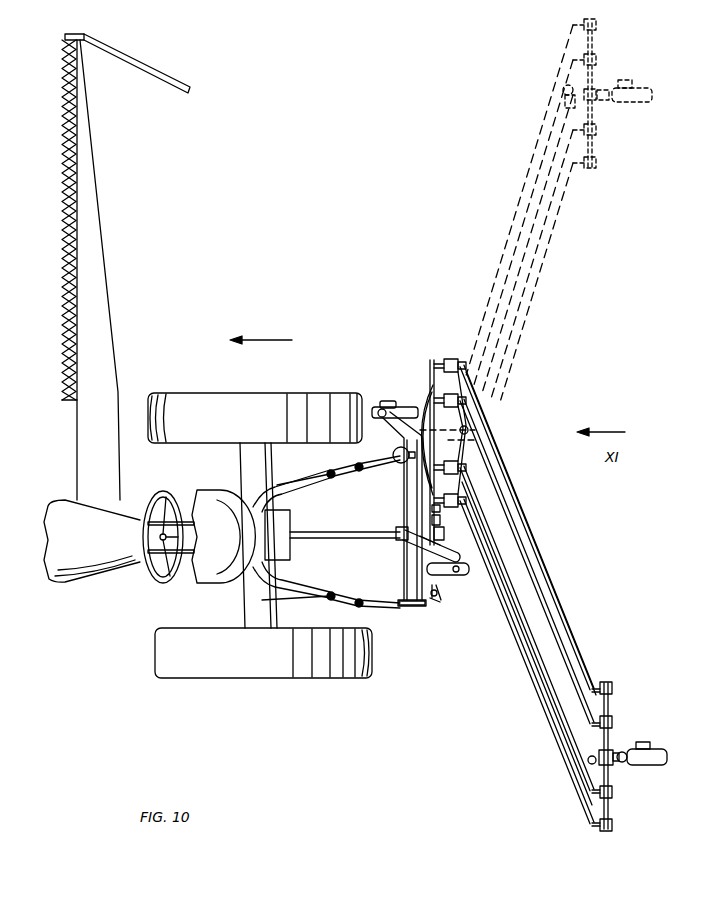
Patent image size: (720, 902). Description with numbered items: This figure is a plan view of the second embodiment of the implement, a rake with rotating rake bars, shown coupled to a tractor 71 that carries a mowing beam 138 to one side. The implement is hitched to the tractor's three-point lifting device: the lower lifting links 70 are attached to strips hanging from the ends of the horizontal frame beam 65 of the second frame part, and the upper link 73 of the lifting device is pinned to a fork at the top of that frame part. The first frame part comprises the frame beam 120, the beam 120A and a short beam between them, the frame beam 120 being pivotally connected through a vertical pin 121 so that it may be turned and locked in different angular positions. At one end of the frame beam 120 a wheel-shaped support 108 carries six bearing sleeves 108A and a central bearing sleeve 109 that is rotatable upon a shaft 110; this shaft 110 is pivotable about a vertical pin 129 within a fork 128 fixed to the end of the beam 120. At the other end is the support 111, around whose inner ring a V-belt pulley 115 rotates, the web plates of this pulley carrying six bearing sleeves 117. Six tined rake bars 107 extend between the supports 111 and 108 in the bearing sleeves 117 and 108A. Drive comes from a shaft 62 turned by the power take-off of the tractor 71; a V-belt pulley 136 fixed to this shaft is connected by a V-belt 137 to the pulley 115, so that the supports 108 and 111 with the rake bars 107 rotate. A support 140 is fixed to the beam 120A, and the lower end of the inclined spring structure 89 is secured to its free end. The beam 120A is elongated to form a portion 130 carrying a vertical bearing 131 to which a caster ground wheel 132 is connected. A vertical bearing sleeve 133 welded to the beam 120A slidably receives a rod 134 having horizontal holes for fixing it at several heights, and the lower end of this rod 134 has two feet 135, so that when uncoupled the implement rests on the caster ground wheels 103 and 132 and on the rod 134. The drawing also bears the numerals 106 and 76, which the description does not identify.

The mowing beam 138 is at (90, 177).
The direction of travel arrow 106 is at (262, 330).
The tractor 71 is at (303, 395).
The vertical bearing 131 is at (376, 408).
The caster ground wheel 132 is at (390, 401).
The portion 130 is at (410, 407).
The support 111 is at (430, 380).
The bearing sleeves 117 is at (450, 358).
The vertical pin 121 is at (470, 430).
The ball joint 76 is at (394, 452).
The lower lifting links 70 is at (380, 468).
The horizontal frame beam 65 is at (401, 505).
The V-belt pulley 115 is at (452, 474).
The upper link 73 is at (347, 532).
The V-belt 137 is at (441, 511).
The V-belt pulley 136 is at (441, 523).
The shaft 62 is at (446, 536).
The inclined spring structure 89 is at (420, 550).
The support 140 is at (462, 571).
The frame beam 120 is at (508, 548).
The rake bars 107 is at (553, 635).
The rod 134 is at (436, 590).
The feet 135 is at (438, 597).
The vertical bearing sleeve 133 is at (433, 603).
The beam 120A is at (416, 607).
The bearing sleeves 108A is at (604, 685).
The wheel-shaped support 108 is at (610, 705).
The central bearing sleeve 109 is at (613, 748).
The fork 128 is at (585, 753).
The vertical pin 129 is at (588, 763).
The shaft 110 is at (621, 765).
The caster ground wheel 103 is at (655, 766).